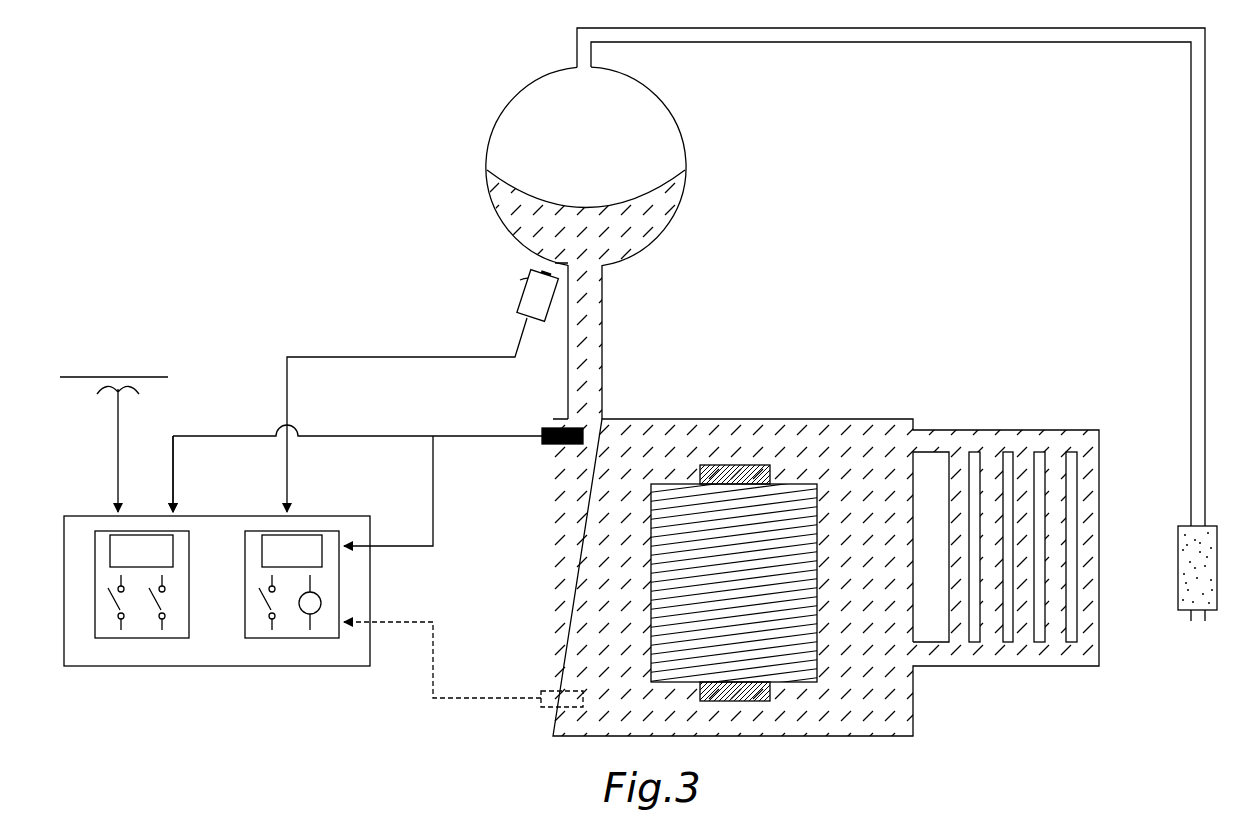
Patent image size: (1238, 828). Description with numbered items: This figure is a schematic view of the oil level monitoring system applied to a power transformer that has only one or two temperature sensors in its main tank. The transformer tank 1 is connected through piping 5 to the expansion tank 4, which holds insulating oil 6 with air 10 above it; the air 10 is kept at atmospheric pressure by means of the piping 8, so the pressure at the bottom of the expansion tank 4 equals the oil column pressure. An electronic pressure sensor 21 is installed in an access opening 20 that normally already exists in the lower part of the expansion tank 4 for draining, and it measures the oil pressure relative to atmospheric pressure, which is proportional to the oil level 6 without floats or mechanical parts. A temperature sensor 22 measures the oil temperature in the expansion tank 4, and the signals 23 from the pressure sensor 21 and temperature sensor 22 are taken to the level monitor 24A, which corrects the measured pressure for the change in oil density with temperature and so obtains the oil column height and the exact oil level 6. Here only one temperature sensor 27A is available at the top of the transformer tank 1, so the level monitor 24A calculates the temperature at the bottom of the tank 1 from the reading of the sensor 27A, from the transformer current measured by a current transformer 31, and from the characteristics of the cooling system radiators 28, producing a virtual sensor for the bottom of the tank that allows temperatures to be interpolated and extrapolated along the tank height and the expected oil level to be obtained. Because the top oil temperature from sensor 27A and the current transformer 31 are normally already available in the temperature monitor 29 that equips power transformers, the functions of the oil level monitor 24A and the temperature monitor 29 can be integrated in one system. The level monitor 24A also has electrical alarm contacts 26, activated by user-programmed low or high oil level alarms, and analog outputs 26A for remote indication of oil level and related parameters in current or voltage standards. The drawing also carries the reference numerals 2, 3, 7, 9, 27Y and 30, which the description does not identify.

The transformer tank 1 is at (900, 419).
The thermoelectric elements 2 is at (727, 465).
The heat exchange block 3 is at (790, 495).
The expansion tank 4 is at (522, 91).
The piping 5 is at (604, 333).
The oil 6 is at (650, 238).
The liquid surface 7 is at (625, 202).
The piping 8 is at (1190, 223).
The filter 9 is at (1183, 551).
The air 10 is at (650, 111).
The access opening 20 is at (541, 266).
The pressure sensor 21 is at (538, 284).
The temperature sensor 22 is at (526, 299).
The signals 23 is at (415, 357).
The level monitor 24A is at (340, 533).
The electrical alarm contacts 26 is at (270, 610).
The analog outputs 26A is at (321, 600).
The temperature sensor 27A is at (545, 445).
The connector 27Y is at (541, 707).
The cooling system radiators 28 is at (1100, 442).
The temperature monitor 29 is at (132, 638).
The control unit 30 is at (98, 516).
The current transformer 31 is at (120, 376).